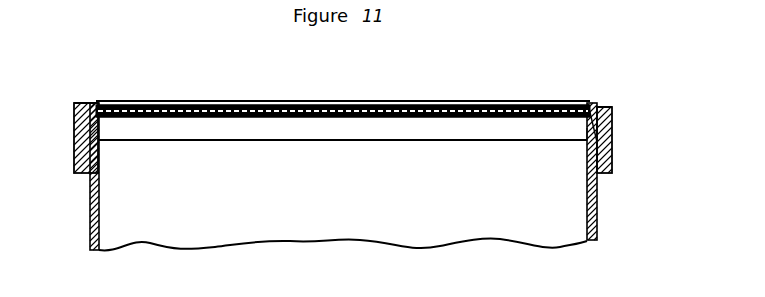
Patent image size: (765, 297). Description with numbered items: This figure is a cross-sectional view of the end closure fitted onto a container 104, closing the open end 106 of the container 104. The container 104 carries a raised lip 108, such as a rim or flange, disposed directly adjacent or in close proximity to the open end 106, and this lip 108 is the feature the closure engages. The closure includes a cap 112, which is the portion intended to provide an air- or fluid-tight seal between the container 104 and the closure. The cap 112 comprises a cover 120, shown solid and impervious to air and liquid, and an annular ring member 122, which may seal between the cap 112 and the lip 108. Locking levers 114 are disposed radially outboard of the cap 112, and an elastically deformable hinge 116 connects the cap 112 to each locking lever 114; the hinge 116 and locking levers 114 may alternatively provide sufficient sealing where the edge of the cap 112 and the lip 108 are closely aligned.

The container 104 is at (355, 230).
The open end 106 is at (560, 137).
The raised lip 108 is at (584, 146).
The cap 112 is at (343, 70).
The locking lever 114 is at (77, 134).
The elastically deformable hinge 116 is at (87, 111).
The cover 120 is at (166, 108).
The ring member 122 is at (100, 130).